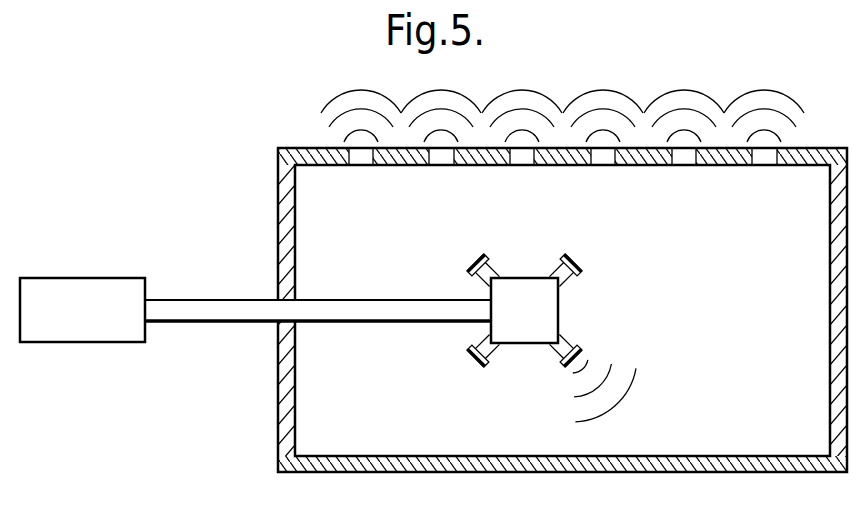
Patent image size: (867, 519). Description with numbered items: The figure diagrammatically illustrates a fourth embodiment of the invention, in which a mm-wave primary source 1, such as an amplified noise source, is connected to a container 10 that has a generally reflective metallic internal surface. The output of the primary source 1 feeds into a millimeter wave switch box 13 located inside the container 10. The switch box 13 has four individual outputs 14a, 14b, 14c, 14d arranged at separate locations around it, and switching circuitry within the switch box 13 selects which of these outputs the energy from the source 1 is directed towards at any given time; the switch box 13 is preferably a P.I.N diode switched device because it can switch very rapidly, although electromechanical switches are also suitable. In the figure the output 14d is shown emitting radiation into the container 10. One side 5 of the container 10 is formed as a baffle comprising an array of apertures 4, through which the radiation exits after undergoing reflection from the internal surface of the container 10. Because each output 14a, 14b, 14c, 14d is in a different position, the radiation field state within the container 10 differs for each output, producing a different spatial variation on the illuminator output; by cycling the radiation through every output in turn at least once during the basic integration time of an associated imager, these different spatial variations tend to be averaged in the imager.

The primary source 1 is at (88, 284).
The apertures 4 is at (350, 113).
The side of the container 5 is at (643, 162).
The container 10 is at (280, 178).
The switch box 13 is at (527, 285).
The output 14a is at (474, 261).
The output 14b is at (574, 260).
The output 14c is at (474, 364).
The output 14d is at (571, 344).